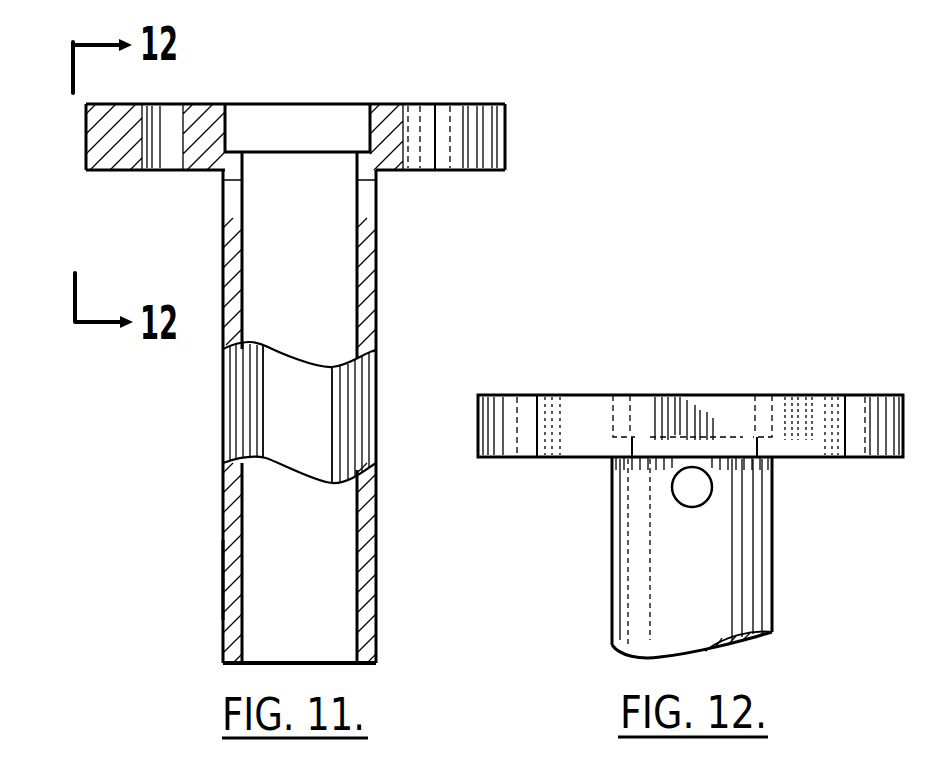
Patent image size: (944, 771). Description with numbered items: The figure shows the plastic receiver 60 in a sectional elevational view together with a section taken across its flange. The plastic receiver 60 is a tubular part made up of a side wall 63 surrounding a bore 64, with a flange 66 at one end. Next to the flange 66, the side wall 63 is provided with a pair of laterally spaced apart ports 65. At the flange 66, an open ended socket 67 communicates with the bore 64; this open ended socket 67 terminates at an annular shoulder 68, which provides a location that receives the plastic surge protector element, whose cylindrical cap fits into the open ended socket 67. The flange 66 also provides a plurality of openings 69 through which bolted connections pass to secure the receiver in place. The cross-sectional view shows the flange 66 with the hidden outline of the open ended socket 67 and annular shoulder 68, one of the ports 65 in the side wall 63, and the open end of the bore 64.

In FIG. 11, the plastic receiver 60 is at (263, 393).
In FIG. 12, the plastic receiver 60 is at (863, 395).
In FIG. 11, the side wall 63 is at (223, 575).
In FIG. 11, the bore 64 is at (325, 530).
In FIG. 12, the bore 64 is at (743, 651).
In FIG. 11, the ports 65 is at (212, 197).
In FIG. 12, the ports 65 is at (686, 489).
In FIG. 11, the flange 66 is at (508, 128).
In FIG. 11, the open ended socket 67 is at (295, 90).
In FIG. 12, the open ended socket 67 is at (730, 410).
In FIG. 11, the annular shoulder 68 is at (246, 146).
In FIG. 12, the annular shoulder 68 is at (628, 388).
In FIG. 11, the openings 69 is at (165, 120).